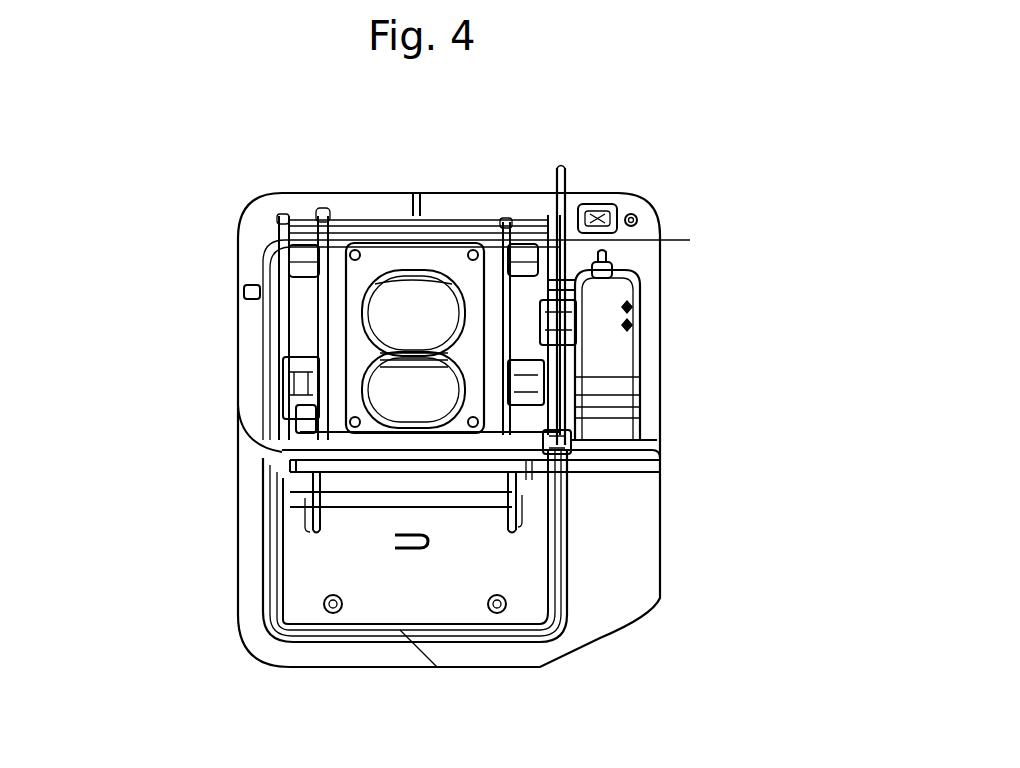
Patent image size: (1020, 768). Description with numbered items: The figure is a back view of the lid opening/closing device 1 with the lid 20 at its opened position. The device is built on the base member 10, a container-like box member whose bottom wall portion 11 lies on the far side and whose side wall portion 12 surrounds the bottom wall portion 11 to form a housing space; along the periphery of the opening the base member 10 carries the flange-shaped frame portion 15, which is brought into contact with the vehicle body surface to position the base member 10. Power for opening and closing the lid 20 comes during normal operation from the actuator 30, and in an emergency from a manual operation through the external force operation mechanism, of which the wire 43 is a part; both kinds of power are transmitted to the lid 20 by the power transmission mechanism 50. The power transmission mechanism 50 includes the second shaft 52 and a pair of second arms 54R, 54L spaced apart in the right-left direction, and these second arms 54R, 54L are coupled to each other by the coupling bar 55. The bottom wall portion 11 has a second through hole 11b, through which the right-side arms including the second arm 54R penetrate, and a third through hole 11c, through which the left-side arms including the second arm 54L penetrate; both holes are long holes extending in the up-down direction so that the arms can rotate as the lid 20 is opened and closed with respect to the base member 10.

The lid opening/closing device 1 is at (648, 200).
The base member 10 is at (233, 370).
The bottom wall portion 11 is at (337, 323).
The second through hole 11b is at (302, 313).
The third through hole 11c is at (565, 330).
The side wall portion 12 is at (398, 200).
The frame portion 15 is at (652, 258).
The lid 20 is at (627, 558).
The actuator 30 is at (648, 347).
The wire 43 is at (556, 190).
The power transmission mechanism 50 is at (252, 250).
The second shaft 52 is at (640, 437).
The second arm 54L is at (515, 487).
The second arm 54R is at (313, 485).
The coupling bar 55 is at (357, 500).